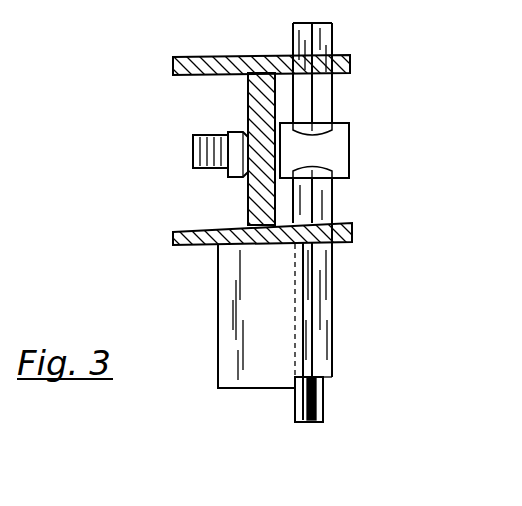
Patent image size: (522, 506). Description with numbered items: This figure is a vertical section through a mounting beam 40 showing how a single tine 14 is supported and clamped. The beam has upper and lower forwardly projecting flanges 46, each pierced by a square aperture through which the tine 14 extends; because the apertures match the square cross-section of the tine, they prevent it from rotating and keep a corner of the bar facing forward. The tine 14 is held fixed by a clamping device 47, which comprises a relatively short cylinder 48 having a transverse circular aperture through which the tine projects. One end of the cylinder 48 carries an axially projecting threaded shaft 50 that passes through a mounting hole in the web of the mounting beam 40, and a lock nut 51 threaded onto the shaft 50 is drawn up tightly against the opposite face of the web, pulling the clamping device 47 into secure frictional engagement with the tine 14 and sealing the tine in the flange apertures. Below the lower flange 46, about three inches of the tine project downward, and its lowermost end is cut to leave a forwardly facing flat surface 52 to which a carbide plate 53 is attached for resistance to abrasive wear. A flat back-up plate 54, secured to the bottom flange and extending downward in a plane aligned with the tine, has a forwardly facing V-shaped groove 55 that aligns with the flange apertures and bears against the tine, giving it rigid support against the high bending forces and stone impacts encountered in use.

The mounting beam 40 is at (242, 140).
The flange 46 is at (172, 13).
The tine 14 is at (334, 27).
The clamping device 47 is at (333, 150).
The cylinder 48 is at (337, 167).
The threaded shaft 50 is at (198, 135).
The lock nut 51 is at (240, 130).
The back-up plate 54 is at (229, 332).
The V-shaped groove 55 is at (303, 380).
The carbide plate 53 is at (341, 414).
The flat surface 52 is at (305, 422).